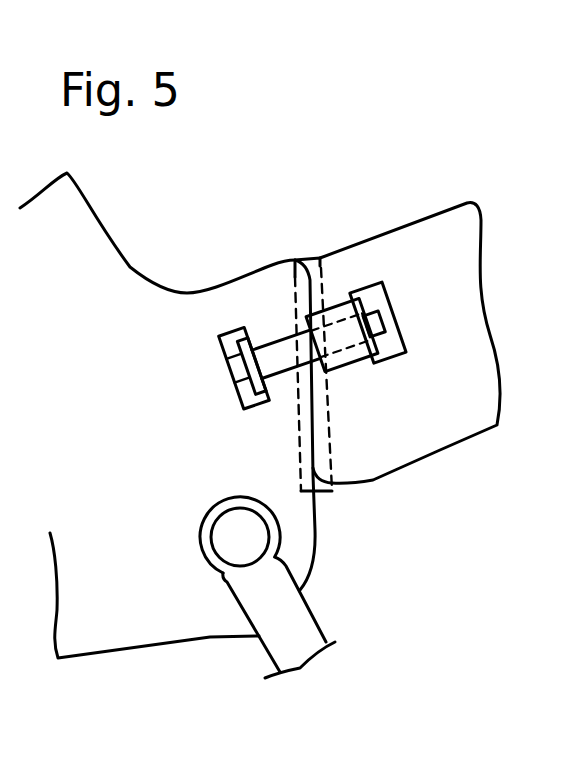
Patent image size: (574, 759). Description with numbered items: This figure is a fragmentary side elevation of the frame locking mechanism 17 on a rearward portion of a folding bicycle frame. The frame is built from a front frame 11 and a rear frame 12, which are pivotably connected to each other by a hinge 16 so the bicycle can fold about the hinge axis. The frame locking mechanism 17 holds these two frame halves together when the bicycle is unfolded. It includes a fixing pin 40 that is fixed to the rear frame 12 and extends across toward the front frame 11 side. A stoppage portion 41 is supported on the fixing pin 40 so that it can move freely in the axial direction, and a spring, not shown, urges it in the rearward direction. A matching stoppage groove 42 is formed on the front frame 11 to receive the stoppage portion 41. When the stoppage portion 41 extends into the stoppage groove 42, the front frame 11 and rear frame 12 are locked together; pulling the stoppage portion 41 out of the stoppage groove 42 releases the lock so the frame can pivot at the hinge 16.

The front frame 11 is at (410, 237).
The rear frame 12 is at (143, 288).
The hinge 16 is at (307, 254).
The frame locking mechanism 17 is at (287, 298).
The fixing pin 40 is at (273, 353).
The stoppage portion 41 is at (352, 373).
The stoppage groove 42 is at (398, 357).